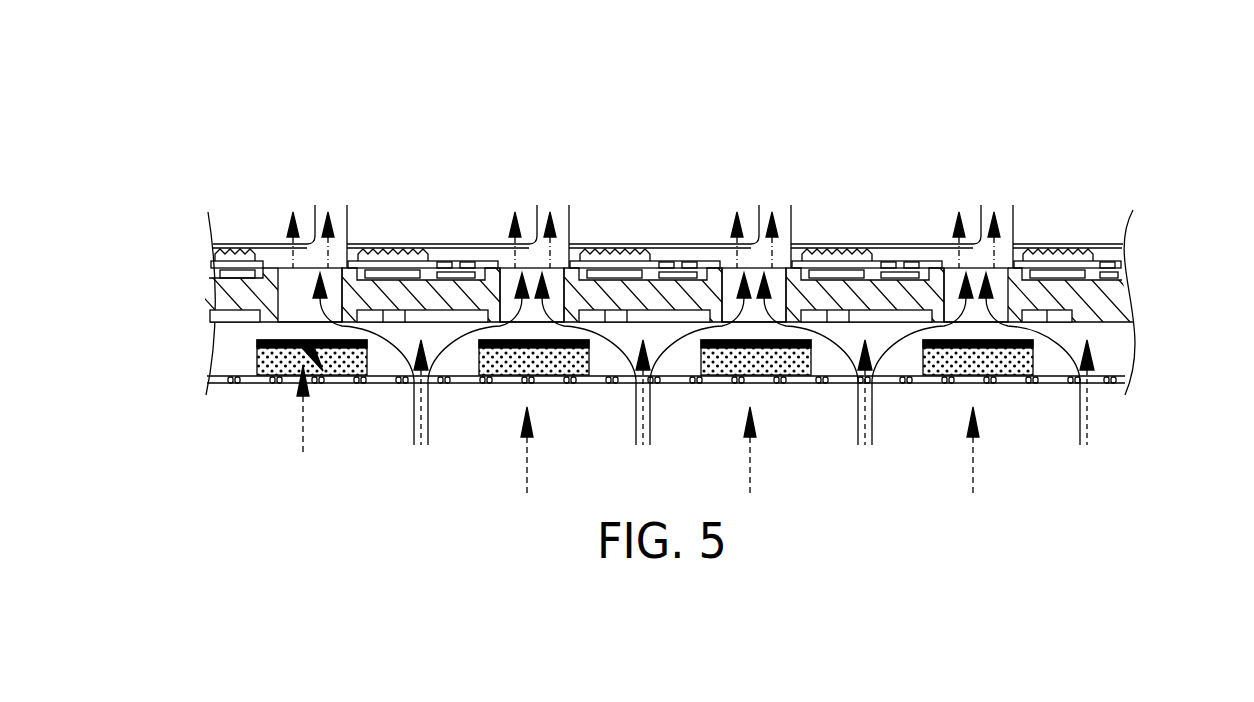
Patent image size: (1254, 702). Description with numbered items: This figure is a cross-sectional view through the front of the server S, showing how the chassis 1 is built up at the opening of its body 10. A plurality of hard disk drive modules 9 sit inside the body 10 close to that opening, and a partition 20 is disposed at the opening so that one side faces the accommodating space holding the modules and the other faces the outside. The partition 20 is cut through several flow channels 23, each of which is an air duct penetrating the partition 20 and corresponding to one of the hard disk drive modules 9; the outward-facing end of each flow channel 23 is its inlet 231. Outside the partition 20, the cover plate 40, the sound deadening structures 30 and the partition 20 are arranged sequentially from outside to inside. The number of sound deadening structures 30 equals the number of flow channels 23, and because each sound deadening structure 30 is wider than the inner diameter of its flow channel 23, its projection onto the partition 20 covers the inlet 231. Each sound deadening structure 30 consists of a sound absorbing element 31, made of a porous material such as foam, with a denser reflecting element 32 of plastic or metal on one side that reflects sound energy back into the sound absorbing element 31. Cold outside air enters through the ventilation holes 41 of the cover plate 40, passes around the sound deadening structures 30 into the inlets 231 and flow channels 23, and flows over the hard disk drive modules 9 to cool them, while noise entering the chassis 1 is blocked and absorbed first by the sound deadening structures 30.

The chassis 1 is at (194, 196).
The server S is at (187, 93).
The hard disk drive module 9 is at (228, 241).
The body 10 is at (1117, 264).
The partition 20 is at (1115, 297).
The flow channel 23 is at (284, 296).
The inlet 231 is at (297, 325).
The sound deadening structure 30 is at (596, 403).
The sound absorbing element 31 is at (577, 373).
The reflecting element 32 is at (478, 350).
The cover plate 40 is at (1117, 380).
The ventilation hole 41 is at (332, 387).